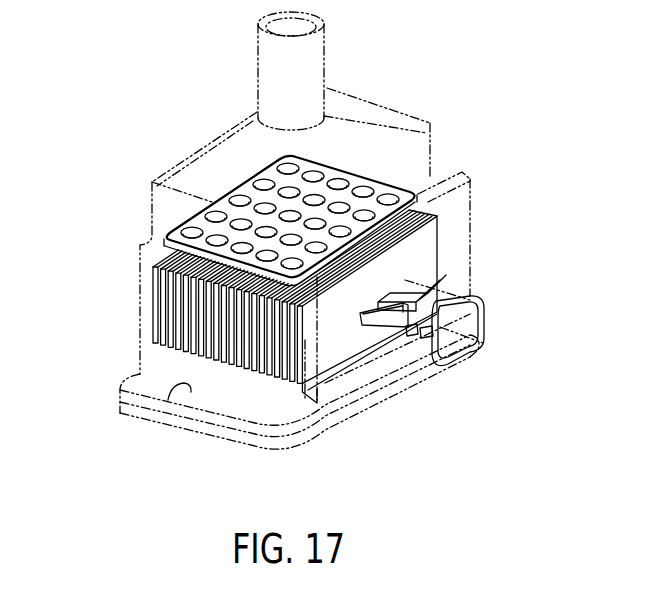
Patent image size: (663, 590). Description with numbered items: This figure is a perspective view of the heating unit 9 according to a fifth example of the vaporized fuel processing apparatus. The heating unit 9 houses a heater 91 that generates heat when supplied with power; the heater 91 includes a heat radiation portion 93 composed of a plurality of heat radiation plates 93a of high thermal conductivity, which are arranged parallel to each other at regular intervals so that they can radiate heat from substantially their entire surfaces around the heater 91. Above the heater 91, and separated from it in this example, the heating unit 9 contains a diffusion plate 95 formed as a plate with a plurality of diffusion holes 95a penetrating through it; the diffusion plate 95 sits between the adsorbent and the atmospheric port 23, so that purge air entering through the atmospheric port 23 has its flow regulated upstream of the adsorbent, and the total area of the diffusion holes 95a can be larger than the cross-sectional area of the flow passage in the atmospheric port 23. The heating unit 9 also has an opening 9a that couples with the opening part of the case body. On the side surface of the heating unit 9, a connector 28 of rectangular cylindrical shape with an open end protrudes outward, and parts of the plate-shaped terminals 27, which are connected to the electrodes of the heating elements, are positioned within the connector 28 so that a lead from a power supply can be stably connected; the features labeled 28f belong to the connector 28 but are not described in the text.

The heating unit 9 is at (98, 192).
The opening 9a is at (179, 398).
The atmospheric port 23 is at (303, 63).
The terminals 27 is at (383, 300).
The connector 28 is at (487, 300).
The flanges of connector ring 28f is at (475, 340).
The heater 91 is at (359, 366).
The heat radiation portion 93 is at (169, 354).
The heat radiation plates 93a is at (175, 307).
The diffusion plate 95 is at (380, 190).
The diffusion holes 95a is at (245, 188).